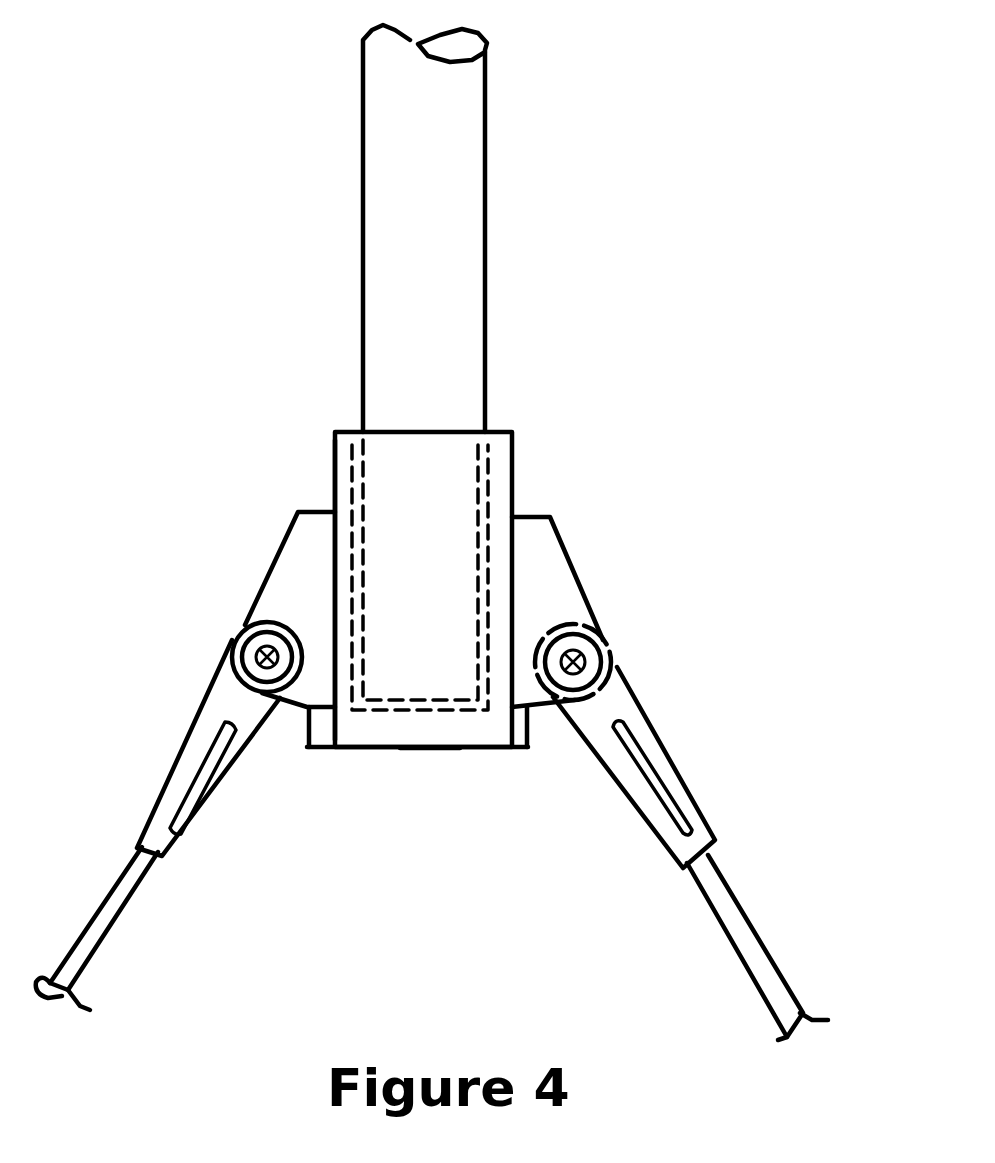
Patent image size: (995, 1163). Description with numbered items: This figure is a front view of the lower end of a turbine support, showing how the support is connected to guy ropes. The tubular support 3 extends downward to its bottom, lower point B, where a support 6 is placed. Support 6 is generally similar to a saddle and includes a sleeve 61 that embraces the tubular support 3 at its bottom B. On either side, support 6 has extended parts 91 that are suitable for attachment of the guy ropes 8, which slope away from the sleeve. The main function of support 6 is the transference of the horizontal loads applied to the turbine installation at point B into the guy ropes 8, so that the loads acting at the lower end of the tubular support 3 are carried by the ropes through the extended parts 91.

The tubular support 3 is at (450, 355).
The support 6 is at (447, 516).
The sleeve 61 is at (337, 483).
The extended parts 91 is at (572, 583).
The guy ropes 8 is at (112, 928).
The lower point (end) of support B is at (461, 755).